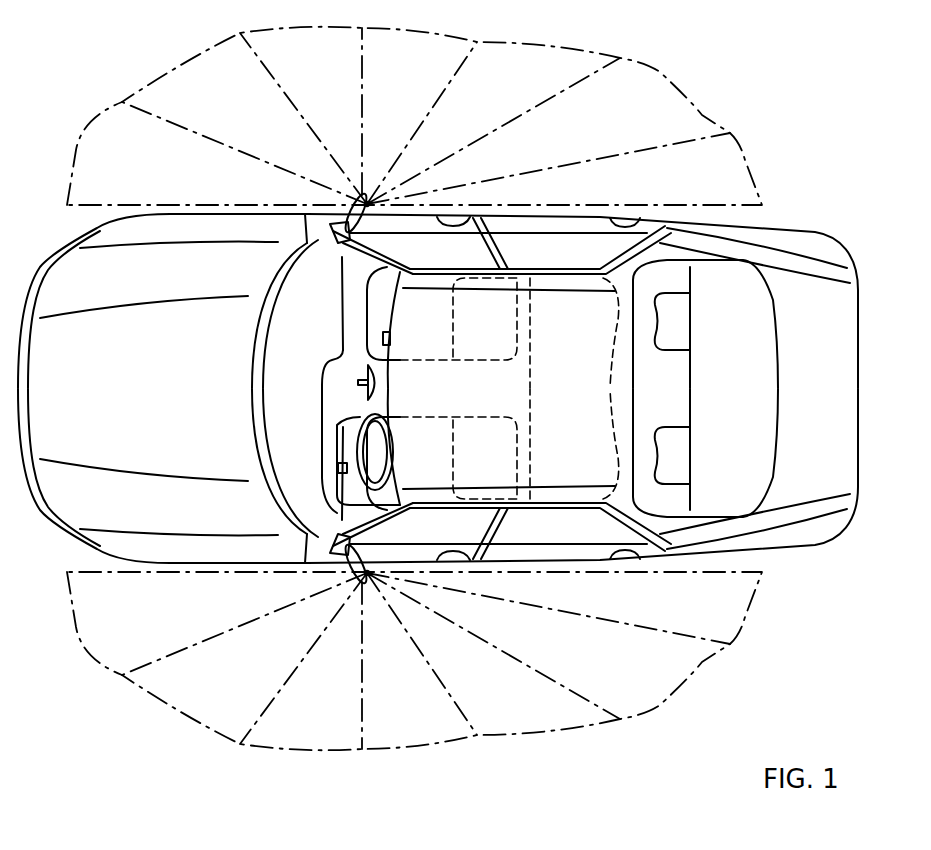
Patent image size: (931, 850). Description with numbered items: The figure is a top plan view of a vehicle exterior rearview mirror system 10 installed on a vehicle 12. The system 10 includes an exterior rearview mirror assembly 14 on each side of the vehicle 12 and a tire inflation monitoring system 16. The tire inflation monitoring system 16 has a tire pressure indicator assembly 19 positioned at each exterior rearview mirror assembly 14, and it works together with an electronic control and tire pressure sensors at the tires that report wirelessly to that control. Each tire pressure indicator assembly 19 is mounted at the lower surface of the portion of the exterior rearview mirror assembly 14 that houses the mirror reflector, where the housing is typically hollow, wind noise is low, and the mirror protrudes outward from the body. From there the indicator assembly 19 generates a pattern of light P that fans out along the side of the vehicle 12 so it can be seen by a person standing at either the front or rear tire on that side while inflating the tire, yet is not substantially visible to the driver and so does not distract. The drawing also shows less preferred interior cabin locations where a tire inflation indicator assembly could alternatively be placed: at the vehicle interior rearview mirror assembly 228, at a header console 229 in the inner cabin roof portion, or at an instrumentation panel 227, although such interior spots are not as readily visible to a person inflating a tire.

The vehicle exterior rearview mirror system 10 is at (257, 683).
The vehicle 12 is at (44, 265).
The exterior rearview mirror assembly 14 is at (355, 190).
The tire inflation monitoring system 16 is at (366, 196).
The tire pressure indicator assembly 19 is at (383, 218).
The instrumentation panel 227 is at (340, 468).
The vehicle interior rearview mirror assembly 228 is at (375, 375).
The header console 229 is at (392, 338).
The pattern of light P is at (702, 116).